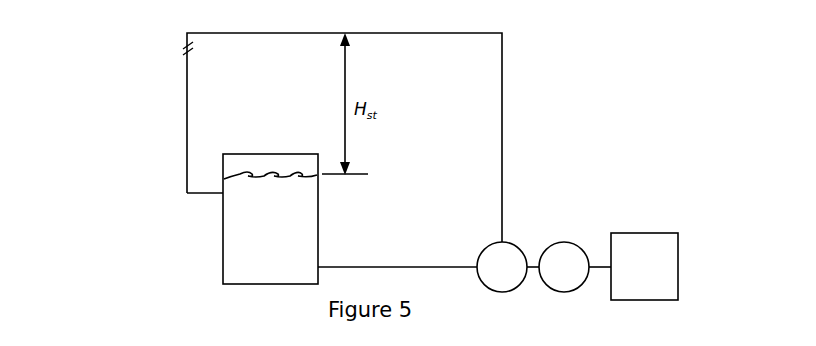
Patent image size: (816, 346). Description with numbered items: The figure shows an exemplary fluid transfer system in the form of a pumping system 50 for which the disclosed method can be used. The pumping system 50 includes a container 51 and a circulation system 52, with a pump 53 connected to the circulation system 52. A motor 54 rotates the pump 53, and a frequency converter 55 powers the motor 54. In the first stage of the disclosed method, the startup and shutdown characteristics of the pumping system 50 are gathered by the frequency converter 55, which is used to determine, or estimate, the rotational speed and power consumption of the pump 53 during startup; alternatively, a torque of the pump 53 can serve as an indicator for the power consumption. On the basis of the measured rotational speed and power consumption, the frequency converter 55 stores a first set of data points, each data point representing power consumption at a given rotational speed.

The pumping system 50 is at (118, 68).
The container 51 is at (283, 231).
The circulation system 52 is at (502, 85).
The pump 53 is at (514, 278).
The motor 54 is at (576, 278).
The frequency converter 55 is at (656, 278).